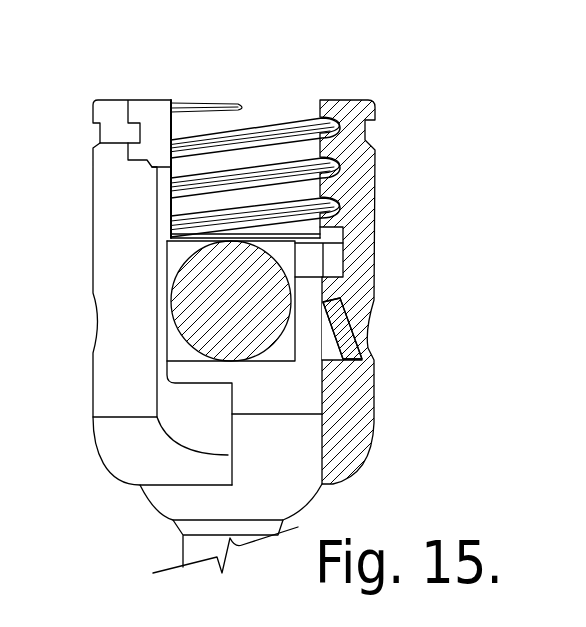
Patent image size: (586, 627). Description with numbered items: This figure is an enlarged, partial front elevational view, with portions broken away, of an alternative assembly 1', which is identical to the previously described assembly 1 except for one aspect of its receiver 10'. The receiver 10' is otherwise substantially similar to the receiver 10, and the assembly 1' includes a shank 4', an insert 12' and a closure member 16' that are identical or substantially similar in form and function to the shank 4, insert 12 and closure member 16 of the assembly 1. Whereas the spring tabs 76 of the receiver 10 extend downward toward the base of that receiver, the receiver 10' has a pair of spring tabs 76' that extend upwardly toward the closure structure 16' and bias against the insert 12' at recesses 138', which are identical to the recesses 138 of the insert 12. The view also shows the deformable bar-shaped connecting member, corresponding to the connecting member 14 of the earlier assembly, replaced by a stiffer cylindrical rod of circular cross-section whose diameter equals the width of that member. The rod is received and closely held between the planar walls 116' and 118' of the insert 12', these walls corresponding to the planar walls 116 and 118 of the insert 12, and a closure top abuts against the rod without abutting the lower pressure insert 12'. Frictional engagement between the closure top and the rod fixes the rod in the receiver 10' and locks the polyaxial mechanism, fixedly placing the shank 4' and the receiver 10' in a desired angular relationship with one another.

The assembly 1' is at (235, 295).
The closure member 16' is at (255, 127).
The receiver 10' is at (134, 292).
The planar wall 118' is at (156, 363).
The planar wall 116' is at (100, 389).
The recess 138' is at (375, 264).
The spring tab 76' is at (384, 329).
The insert 12' is at (341, 292).
The shank 4' is at (215, 528).
The assembly 1 is at (235, 295).
The closure member 16 is at (255, 127).
The receiver 10 is at (134, 292).
The connecting member 14 is at (158, 301).
The ball seat chamber wall 118 is at (156, 363).
The valve seat 116 is at (100, 389).
The recess 138 is at (375, 264).
The spring tab 76 is at (384, 329).
The insert 12 is at (341, 292).
The shank 4 is at (215, 528).